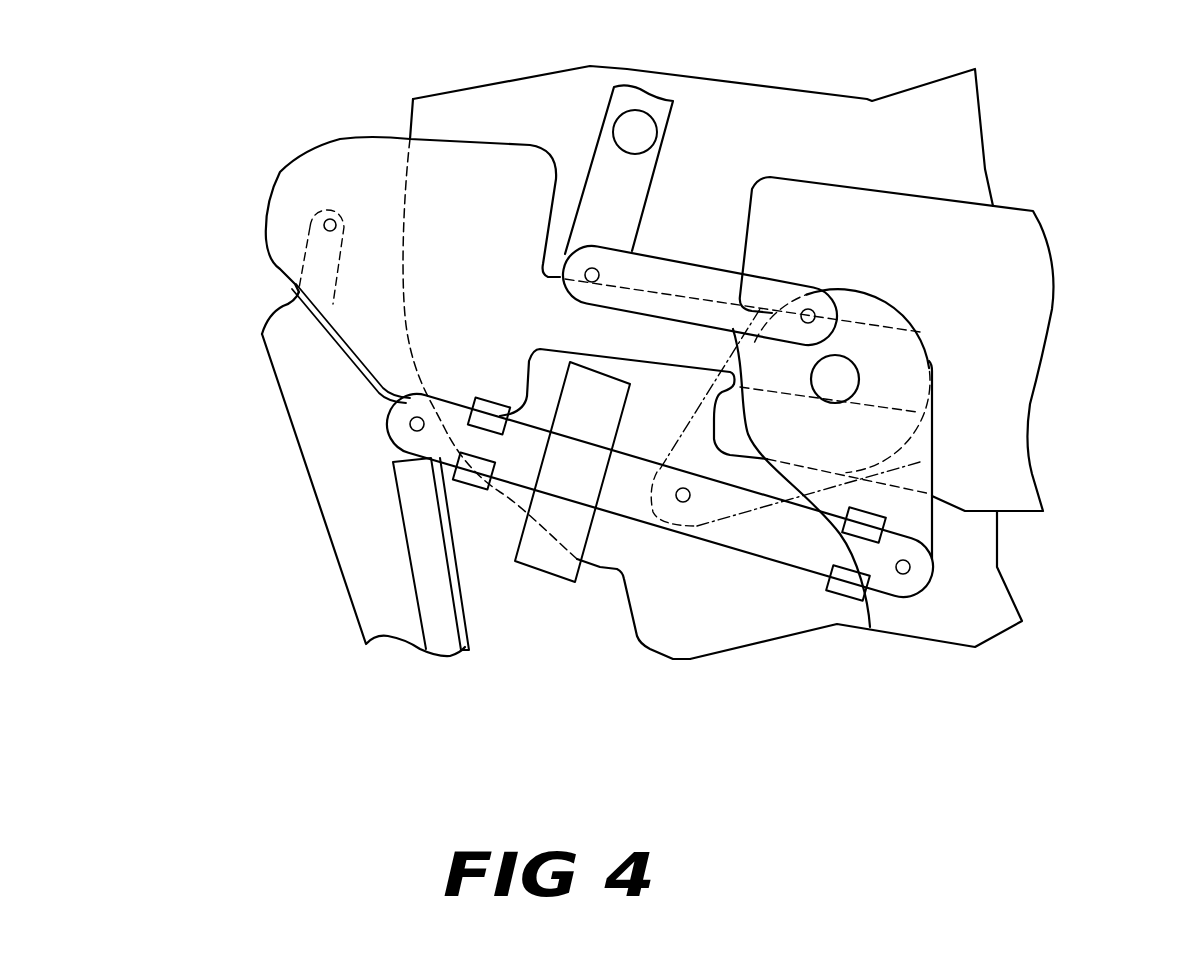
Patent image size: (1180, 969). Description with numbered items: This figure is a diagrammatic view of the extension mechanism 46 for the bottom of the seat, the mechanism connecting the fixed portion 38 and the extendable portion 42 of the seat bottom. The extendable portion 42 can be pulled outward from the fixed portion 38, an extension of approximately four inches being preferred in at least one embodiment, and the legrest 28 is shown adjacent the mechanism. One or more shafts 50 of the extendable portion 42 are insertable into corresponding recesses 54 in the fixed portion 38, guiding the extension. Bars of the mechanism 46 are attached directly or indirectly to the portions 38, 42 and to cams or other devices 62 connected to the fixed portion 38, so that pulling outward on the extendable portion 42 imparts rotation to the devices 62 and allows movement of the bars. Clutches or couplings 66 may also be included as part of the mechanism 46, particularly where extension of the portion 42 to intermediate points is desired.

The legrest 28 is at (300, 472).
The fixed portion 38 is at (1015, 240).
The extendable portion 42 is at (316, 183).
The extension mechanism 46 is at (715, 150).
The shaft 50 is at (633, 347).
The recess 54 is at (880, 377).
The cam or other device 62 is at (933, 518).
The clutch or coupling 66 is at (514, 582).